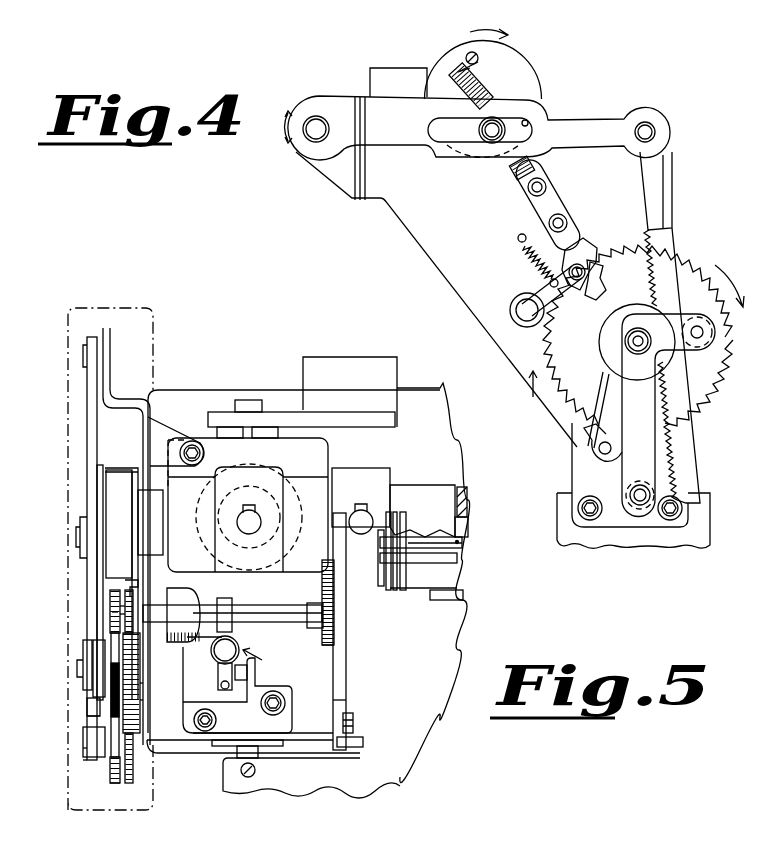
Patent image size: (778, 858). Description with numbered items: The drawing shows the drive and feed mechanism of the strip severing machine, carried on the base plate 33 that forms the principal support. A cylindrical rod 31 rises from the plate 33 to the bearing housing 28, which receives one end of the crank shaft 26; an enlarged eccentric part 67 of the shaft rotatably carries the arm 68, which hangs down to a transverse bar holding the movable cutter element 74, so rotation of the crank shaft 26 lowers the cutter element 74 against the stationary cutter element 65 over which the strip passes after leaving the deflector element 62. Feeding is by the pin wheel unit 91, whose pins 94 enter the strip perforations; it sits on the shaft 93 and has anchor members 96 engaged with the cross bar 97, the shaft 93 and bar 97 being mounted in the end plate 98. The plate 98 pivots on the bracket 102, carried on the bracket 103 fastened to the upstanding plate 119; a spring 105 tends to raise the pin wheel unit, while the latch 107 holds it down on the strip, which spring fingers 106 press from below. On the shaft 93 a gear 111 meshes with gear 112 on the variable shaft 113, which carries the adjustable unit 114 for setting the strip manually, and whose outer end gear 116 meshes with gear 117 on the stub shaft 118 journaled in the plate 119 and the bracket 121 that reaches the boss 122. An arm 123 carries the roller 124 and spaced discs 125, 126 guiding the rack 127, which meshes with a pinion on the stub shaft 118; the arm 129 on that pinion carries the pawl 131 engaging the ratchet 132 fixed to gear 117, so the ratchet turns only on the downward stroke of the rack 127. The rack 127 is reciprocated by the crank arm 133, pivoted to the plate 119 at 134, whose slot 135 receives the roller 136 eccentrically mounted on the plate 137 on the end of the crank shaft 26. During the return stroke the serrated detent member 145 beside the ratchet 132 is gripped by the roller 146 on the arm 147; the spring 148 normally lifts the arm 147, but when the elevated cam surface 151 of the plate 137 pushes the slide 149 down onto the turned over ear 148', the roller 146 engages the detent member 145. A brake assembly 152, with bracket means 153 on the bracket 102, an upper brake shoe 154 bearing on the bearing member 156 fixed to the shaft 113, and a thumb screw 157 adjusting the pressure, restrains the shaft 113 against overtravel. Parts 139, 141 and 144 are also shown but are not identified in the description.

In FIG. 4, the crank shaft 26 is at (163, 508).
In FIG. 4, the bearing housing 28 is at (272, 470).
In FIG. 4, the cylindrical rod 31 is at (275, 502).
In FIG. 5, the plate 33 is at (712, 533).
In FIG. 4, the plate 33 is at (190, 755).
In FIG. 4, the deflector element 62 is at (385, 775).
In FIG. 4, the stationary cutter element 65 is at (470, 525).
In FIG. 4, the eccentric part 67 is at (418, 486).
In FIG. 4, the arm 68 is at (364, 470).
In FIG. 4, the cutter element 74 is at (469, 500).
In FIG. 4, the pin wheel unit 91 is at (397, 587).
In FIG. 4, the shaft 93 is at (463, 545).
In FIG. 4, the pins 94 is at (390, 590).
In FIG. 4, the anchor members 96 is at (407, 571).
In FIG. 4, the cross bar 97 is at (458, 560).
In FIG. 4, the end plate 98 is at (346, 683).
In FIG. 4, the bracket 102 is at (333, 690).
In FIG. 4, the bracket 103 is at (172, 733).
In FIG. 4, the spring 105 is at (354, 727).
In FIG. 4, the spring fingers 106 is at (420, 590).
In FIG. 4, the latch 107 is at (364, 742).
In FIG. 4, the gear 111 is at (322, 575).
In FIG. 4, the gear 112 is at (325, 648).
In FIG. 4, the supplemental shaft 113 is at (280, 622).
In FIG. 4, the unit 114 is at (181, 615).
In FIG. 5, the gear 116 is at (548, 388).
In FIG. 4, the gear 116 is at (141, 650).
In FIG. 4, the gear 117 is at (141, 700).
In FIG. 5, the stub shaft 118 is at (637, 353).
In FIG. 4, the stub shaft 118 is at (141, 683).
In FIG. 5, the plate 119 is at (612, 520).
In FIG. 4, the plate 119 is at (111, 397).
In FIG. 5, the bracket 121 is at (617, 485).
In FIG. 4, the bracket 121 is at (74, 756).
In FIG. 5, the boss 122 is at (650, 512).
In FIG. 5, the arm 123 is at (690, 316).
In FIG. 4, the arm 123 is at (82, 764).
In FIG. 5, the roller 124 is at (705, 338).
In FIG. 4, the roller 124 is at (92, 760).
In FIG. 4, the disc 125 is at (110, 626).
In FIG. 5, the disc 126 is at (599, 350).
In FIG. 4, the disc 126 is at (83, 655).
In FIG. 5, the rack 127 is at (692, 443).
In FIG. 4, the rack 127 is at (87, 714).
In FIG. 5, the arm 129 is at (606, 387).
In FIG. 4, the arm 129 is at (87, 704).
In FIG. 5, the pawl 131 is at (590, 436).
In FIG. 4, the pawl 131 is at (108, 775).
In FIG. 5, the ratchet 132 is at (720, 395).
In FIG. 4, the ratchet 132 is at (115, 790).
In FIG. 5, the crank arm 133 is at (565, 115).
In FIG. 4, the crank arm 133 is at (87, 437).
In FIG. 5, the pivotal connection 134 is at (312, 138).
In FIG. 4, the pivotal connection 134 is at (83, 358).
In FIG. 5, the slot 135 is at (530, 115).
In FIG. 5, the roller 136 is at (498, 114).
In FIG. 4, the roller 136 is at (100, 523).
In FIG. 5, the plate 137 is at (524, 66).
In FIG. 4, the plate 137 is at (97, 467).
In FIG. 5, the screw 139 is at (478, 77).
In FIG. 5, the screw slot 141 is at (461, 79).
In FIG. 5, the screw head 144 is at (470, 52).
In FIG. 5, the detent member 145 is at (603, 279).
In FIG. 4, the detent member 145 is at (130, 790).
In FIG. 5, the roller 146 is at (577, 282).
In FIG. 4, the roller 146 is at (120, 606).
In FIG. 5, the arm 147 is at (510, 306).
In FIG. 4, the arm 147 is at (120, 614).
In FIG. 5, the spring 148 is at (519, 260).
In FIG. 5, the turned over ear 148' is at (592, 260).
In FIG. 4, the turned over ear 148' is at (64, 620).
In FIG. 5, the slide 149 is at (570, 230).
In FIG. 4, the slide 149 is at (138, 590).
In FIG. 5, the cam surface 151 is at (460, 60).
In FIG. 4, the cam surface 151 is at (118, 500).
In FIG. 4, the brake assembly 152 is at (261, 664).
In FIG. 4, the bracket means 153 is at (280, 722).
In FIG. 4, the upper brake shoe 154 is at (228, 598).
In FIG. 4, the bearing member 156 is at (218, 604).
In FIG. 4, the thumb screw 157 is at (215, 652).